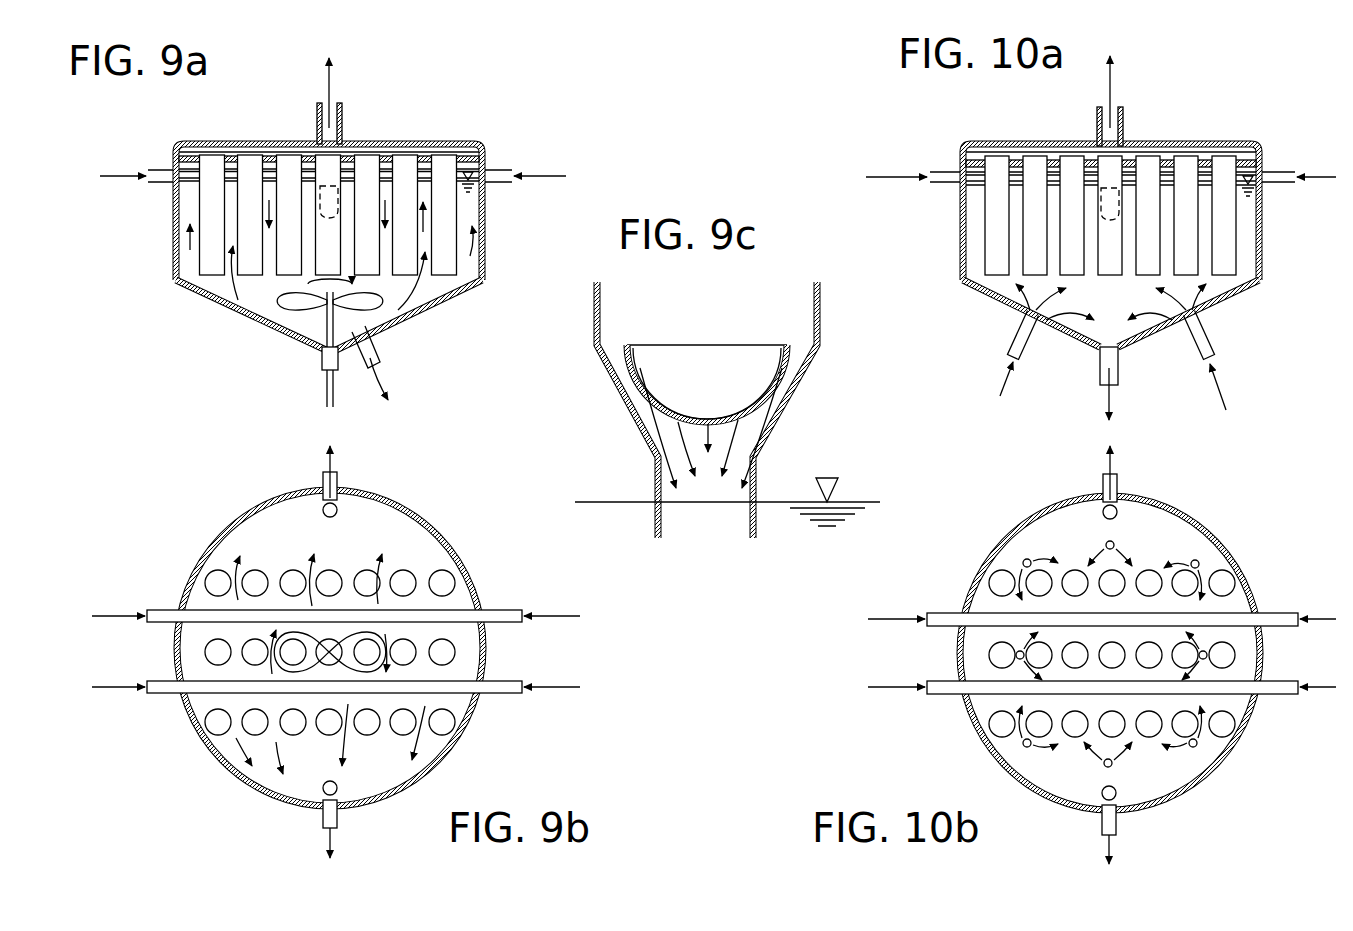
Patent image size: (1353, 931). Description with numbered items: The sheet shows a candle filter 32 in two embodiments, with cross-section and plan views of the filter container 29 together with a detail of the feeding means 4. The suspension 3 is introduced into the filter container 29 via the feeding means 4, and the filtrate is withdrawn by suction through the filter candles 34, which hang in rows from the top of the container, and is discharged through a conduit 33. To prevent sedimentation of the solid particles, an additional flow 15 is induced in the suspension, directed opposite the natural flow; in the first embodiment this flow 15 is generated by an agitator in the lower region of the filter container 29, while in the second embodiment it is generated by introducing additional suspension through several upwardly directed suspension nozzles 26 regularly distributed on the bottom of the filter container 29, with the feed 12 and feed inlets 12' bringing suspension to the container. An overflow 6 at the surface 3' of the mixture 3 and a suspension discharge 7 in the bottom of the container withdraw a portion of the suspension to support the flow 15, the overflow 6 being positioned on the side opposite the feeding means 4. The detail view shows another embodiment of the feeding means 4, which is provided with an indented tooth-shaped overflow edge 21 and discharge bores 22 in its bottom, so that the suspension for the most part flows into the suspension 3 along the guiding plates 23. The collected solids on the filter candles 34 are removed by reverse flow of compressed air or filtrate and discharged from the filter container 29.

In FIG. 9a, the suspension 3 is at (364, 212).
In FIG. 9b, the suspension 3 is at (232, 505).
In FIG. 9c, the suspension 3 is at (784, 544).
In FIG. 10a, the suspension 3 is at (1145, 217).
In FIG. 10b, the suspension 3 is at (1015, 504).
In FIG. 9a, the surface of the mixture 3' is at (461, 136).
In FIG. 9c, the surface of the mixture 3' is at (734, 474).
In FIG. 10a, the surface of the mixture 3' is at (1244, 137).
In FIG. 9a, the feeding means 4 is at (495, 166).
In FIG. 9b, the feeding means 4 is at (497, 612).
In FIG. 9c, the feeding means 4 is at (688, 412).
In FIG. 10a, the feeding means 4 is at (1272, 168).
In FIG. 10b, the feeding means 4 is at (940, 612).
In FIG. 9a, the overflow channel 6 is at (320, 205).
In FIG. 9b, the overflow channel 6 is at (338, 478).
In FIG. 10a, the overflow channel 6 is at (1103, 204).
In FIG. 10b, the overflow channel 6 is at (1117, 488).
In FIG. 9a, the suspension discharge 7 is at (380, 380).
In FIG. 10a, the suspension discharge 7 is at (1112, 398).
In FIG. 10a, the feed line 12 is at (1309, 202).
In FIG. 9a, the feed inlet 12' is at (328, 151).
In FIG. 9b, the feed inlet 12' is at (334, 623).
In FIG. 10a, the feed inlet 12' is at (891, 145).
In FIG. 10b, the feed inlet 12' is at (1093, 639).
In FIG. 9a, the flow 15 is at (243, 288).
In FIG. 9b, the flow 15 is at (268, 732).
In FIG. 9c, the flow 15 is at (742, 470).
In FIG. 10a, the flow 15 is at (1028, 300).
In FIG. 10b, the flow 15 is at (1092, 750).
In FIG. 9c, the overflow edge 21 is at (777, 368).
In FIG. 9c, the discharge bores 22 is at (706, 424).
In FIG. 9c, the guiding plates 23 is at (617, 382).
In FIG. 10a, the suspension nozzles 26 is at (1024, 344).
In FIG. 10b, the suspension nozzles 26 is at (1198, 562).
In FIG. 9a, the filter container 29 is at (174, 250).
In FIG. 9b, the filter container 29 is at (445, 755).
In FIG. 10a, the filter container 29 is at (962, 238).
In FIG. 10b, the filter container 29 is at (1238, 748).
In FIG. 9a, the candle filter 32 is at (383, 132).
In FIG. 10a, the candle filter 32 is at (1172, 130).
In FIG. 9a, the conduit 33 is at (328, 100).
In FIG. 10a, the conduit 33 is at (1112, 88).
In FIG. 9a, the filter candles 34 is at (221, 168).
In FIG. 9b, the filter candles 34 is at (214, 722).
In FIG. 10a, the filter candles 34 is at (998, 176).
In FIG. 10b, the filter candles 34 is at (996, 728).